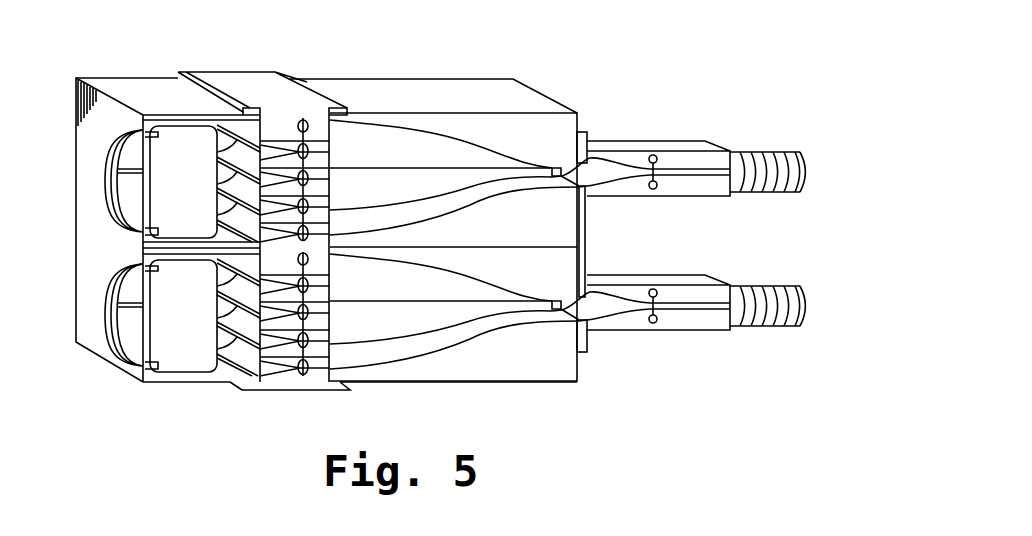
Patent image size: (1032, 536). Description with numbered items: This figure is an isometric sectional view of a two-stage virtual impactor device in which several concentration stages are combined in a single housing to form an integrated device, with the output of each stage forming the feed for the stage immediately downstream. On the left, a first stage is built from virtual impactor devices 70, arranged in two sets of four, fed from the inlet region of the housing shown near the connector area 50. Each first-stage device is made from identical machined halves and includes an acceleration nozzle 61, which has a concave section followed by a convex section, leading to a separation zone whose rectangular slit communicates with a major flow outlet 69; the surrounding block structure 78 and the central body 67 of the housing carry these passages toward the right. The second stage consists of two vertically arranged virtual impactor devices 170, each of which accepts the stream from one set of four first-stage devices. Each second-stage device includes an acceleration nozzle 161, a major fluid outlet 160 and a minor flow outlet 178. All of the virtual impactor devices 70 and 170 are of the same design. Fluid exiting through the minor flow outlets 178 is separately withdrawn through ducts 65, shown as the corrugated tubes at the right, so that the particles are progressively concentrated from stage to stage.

The optical connector plug 50 is at (166, 184).
The acceleration nozzle 61 is at (258, 126).
The virtual impactor devices 70 is at (288, 130).
The major flow outlet 69 is at (301, 136).
The fiber block housing 78 is at (313, 133).
The waveguide block 67 is at (408, 166).
The acceleration nozzles 161 is at (596, 164).
The major fluid outlets 160 is at (660, 162).
The virtual impactor devices 170 is at (699, 162).
The minor flow outlets 178 is at (703, 176).
The ducts 65 is at (777, 287).